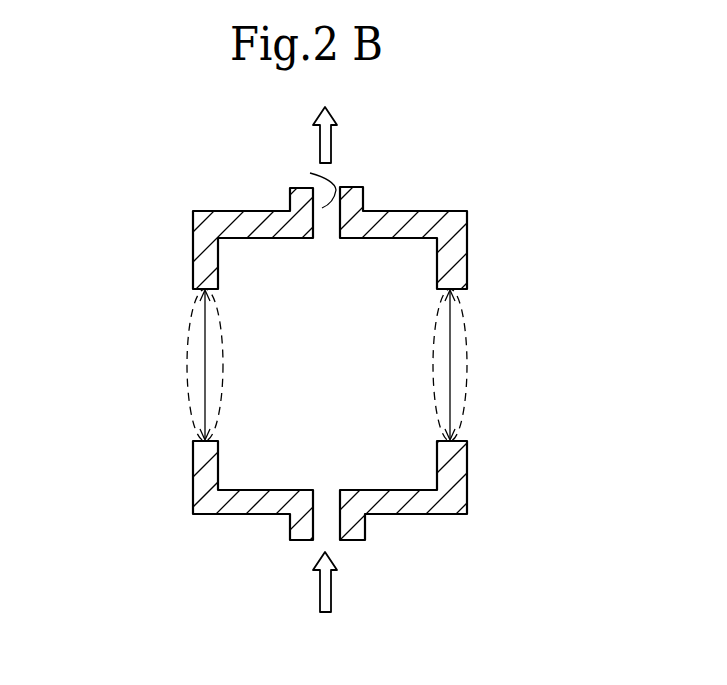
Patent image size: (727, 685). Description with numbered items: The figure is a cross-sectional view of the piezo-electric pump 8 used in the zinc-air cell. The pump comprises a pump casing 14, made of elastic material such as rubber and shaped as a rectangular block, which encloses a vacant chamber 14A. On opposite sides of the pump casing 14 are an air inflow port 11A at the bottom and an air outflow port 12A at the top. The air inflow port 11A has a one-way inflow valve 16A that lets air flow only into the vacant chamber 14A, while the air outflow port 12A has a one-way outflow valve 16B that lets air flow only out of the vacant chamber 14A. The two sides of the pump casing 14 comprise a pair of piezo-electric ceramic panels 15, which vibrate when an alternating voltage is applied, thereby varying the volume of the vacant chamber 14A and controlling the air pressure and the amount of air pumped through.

The piezo-electric pump 8 is at (300, 364).
The air inflow port 11A is at (336, 528).
The air outflow port 12A is at (312, 198).
The pump casing 14 is at (425, 223).
The vacant chamber 14A is at (420, 466).
The piezo-electric ceramic panels 15 is at (450, 360).
The one-way inflow valve 16A is at (345, 478).
The one-way outflow valve 16B is at (315, 207).